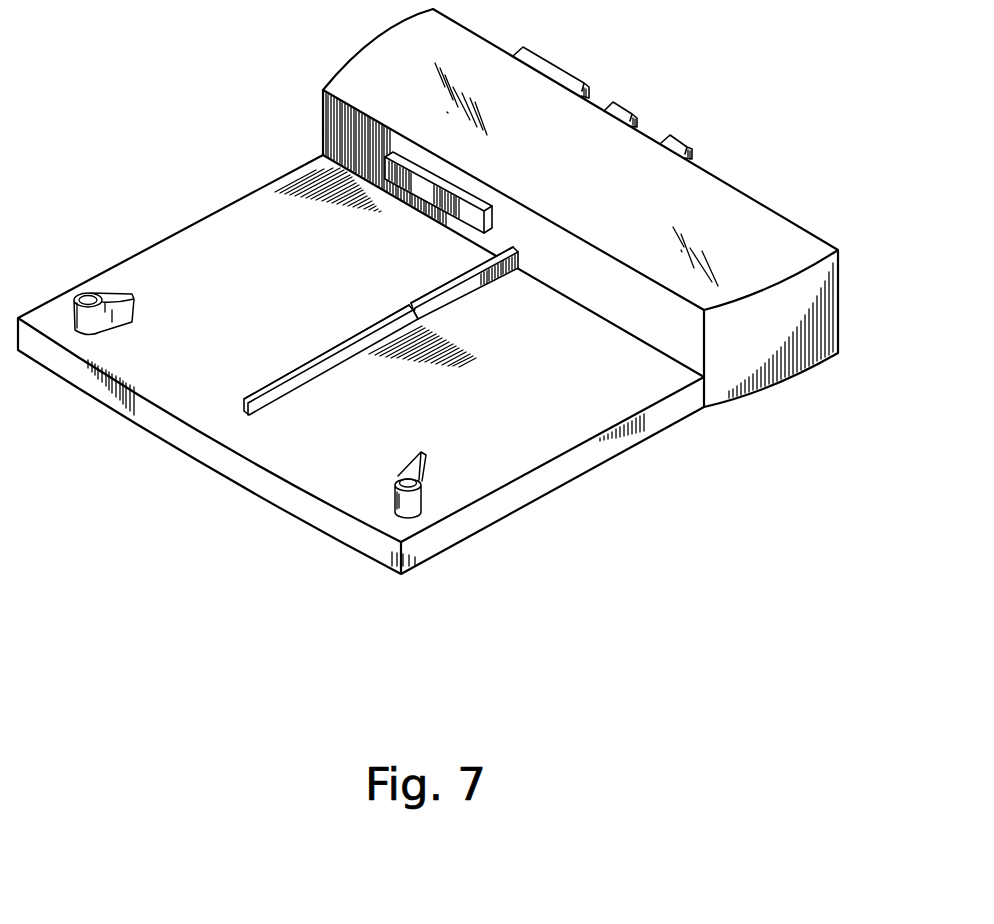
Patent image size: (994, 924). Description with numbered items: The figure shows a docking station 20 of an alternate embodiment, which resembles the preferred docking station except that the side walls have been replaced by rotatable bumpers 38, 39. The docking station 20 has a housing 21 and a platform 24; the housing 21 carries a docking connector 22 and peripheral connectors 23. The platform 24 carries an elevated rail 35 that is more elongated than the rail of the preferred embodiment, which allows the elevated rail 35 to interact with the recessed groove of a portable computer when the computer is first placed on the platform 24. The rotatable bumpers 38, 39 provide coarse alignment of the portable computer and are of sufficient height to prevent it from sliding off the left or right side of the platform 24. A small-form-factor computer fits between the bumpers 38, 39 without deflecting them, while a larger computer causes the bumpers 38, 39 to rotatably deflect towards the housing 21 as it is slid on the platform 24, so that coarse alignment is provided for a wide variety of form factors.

The docking station 20 is at (452, 291).
The housing 21 is at (767, 205).
The docking connector 22 is at (468, 200).
The peripheral connectors 23 is at (677, 138).
The platform 24 is at (295, 286).
The elevated rail 35 is at (440, 303).
The rotatable bumper 38 is at (93, 322).
The rotatable bumper 39 is at (412, 503).